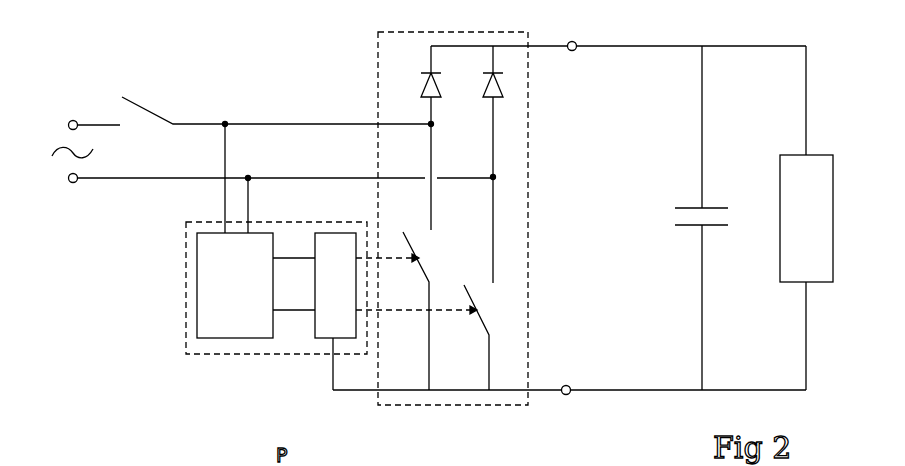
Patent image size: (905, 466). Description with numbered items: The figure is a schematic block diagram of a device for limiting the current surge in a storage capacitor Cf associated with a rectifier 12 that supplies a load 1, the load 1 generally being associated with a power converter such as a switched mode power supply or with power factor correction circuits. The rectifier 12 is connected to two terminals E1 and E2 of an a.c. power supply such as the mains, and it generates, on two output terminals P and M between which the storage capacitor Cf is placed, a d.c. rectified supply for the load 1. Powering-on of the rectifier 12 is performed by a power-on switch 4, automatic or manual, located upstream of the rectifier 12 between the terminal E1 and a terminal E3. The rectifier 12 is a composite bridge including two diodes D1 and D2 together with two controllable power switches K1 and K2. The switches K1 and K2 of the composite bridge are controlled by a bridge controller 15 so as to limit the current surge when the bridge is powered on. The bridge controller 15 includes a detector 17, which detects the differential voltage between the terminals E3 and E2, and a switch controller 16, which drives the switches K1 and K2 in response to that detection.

The load 1 is at (820, 225).
The power-on switch 4 is at (145, 107).
The rectifier 12 is at (378, 64).
The bridge controller 15 is at (187, 250).
The switch controller 16 is at (311, 338).
The detector 17 is at (218, 338).
The terminal E1 is at (78, 125).
The terminal E2 is at (263, 200).
The terminal E3 is at (224, 118).
The diode D1 is at (446, 138).
The diode D2 is at (508, 164).
The controllable power switch K1 is at (488, 337).
The controllable power switch K2 is at (426, 311).
The terminal P is at (573, 41).
The terminal M is at (566, 385).
The storage capacitor Cf is at (704, 218).